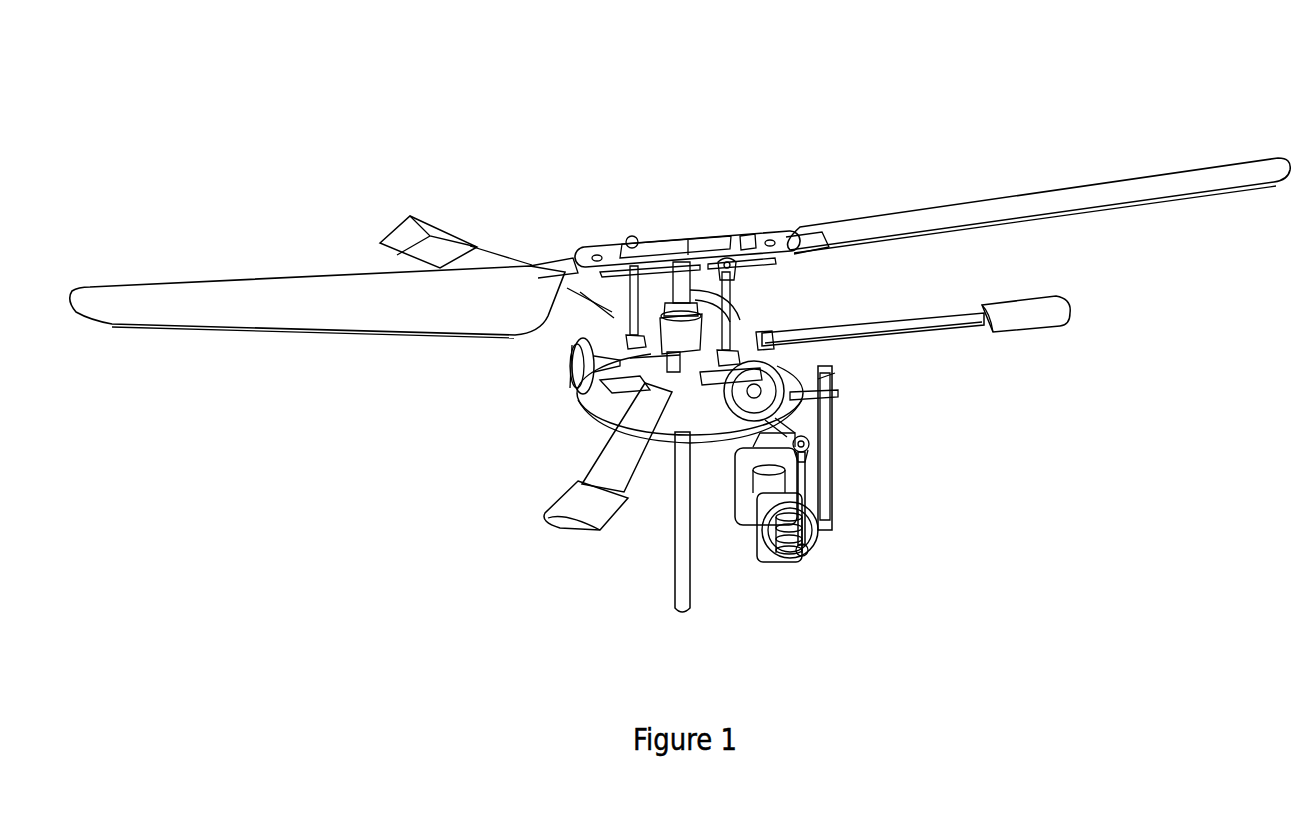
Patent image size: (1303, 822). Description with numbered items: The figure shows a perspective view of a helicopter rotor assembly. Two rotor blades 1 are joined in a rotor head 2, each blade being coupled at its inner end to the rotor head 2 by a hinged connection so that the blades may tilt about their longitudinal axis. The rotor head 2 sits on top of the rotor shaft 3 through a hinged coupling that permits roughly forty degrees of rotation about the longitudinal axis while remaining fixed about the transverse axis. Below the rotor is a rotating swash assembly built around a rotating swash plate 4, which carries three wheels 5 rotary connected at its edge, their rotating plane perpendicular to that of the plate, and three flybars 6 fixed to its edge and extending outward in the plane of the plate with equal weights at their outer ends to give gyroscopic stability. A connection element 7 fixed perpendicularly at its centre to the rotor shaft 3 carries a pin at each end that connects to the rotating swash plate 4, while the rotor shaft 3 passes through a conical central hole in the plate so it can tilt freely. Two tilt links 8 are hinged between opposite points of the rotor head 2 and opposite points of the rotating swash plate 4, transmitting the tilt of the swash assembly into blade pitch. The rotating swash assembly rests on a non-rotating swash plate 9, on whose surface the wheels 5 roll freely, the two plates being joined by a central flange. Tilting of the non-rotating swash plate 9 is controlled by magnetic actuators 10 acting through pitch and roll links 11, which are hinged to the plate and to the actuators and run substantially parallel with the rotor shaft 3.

The rotor blade 1 is at (181, 298).
The rotor head 2 is at (741, 235).
The rotor shaft 3 is at (683, 540).
The rotating swash plate 4 is at (605, 420).
The wheel 5 is at (574, 350).
The flybar 6 is at (483, 262).
The connection element 7 is at (645, 386).
The tilt link 8 is at (652, 290).
The non-rotating swash plate 9 is at (700, 421).
The magnetic actuator 10 is at (815, 543).
The pitch and roll link 11 is at (800, 472).